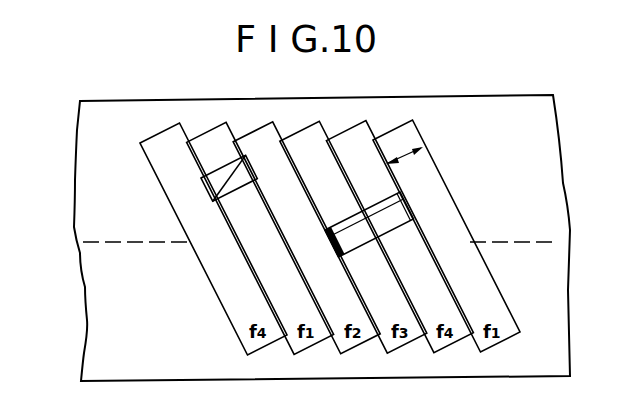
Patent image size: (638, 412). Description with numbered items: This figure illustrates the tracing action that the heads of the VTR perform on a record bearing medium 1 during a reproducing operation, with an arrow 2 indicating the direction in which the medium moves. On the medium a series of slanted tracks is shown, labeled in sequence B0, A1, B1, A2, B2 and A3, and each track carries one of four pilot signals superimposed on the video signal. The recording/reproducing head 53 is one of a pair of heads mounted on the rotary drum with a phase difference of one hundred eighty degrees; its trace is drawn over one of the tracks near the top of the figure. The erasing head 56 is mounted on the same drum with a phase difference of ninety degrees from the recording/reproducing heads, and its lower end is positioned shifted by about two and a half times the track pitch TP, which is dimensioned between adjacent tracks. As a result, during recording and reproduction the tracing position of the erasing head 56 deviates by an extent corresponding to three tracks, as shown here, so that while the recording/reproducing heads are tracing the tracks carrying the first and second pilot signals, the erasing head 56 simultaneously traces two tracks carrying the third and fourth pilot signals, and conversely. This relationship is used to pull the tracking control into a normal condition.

The magnetic tape 1 is at (537, 95).
The tape running direction 2 is at (420, 73).
The recording/reproducing head 53 is at (222, 176).
The erasing head 56 is at (393, 229).
The track B0 is at (158, 139).
The track A1 is at (213, 139).
The track B1 is at (262, 138).
The track A2 is at (308, 137).
The track B2 is at (353, 137).
The track A3 is at (398, 137).
The track pitch TP is at (410, 157).